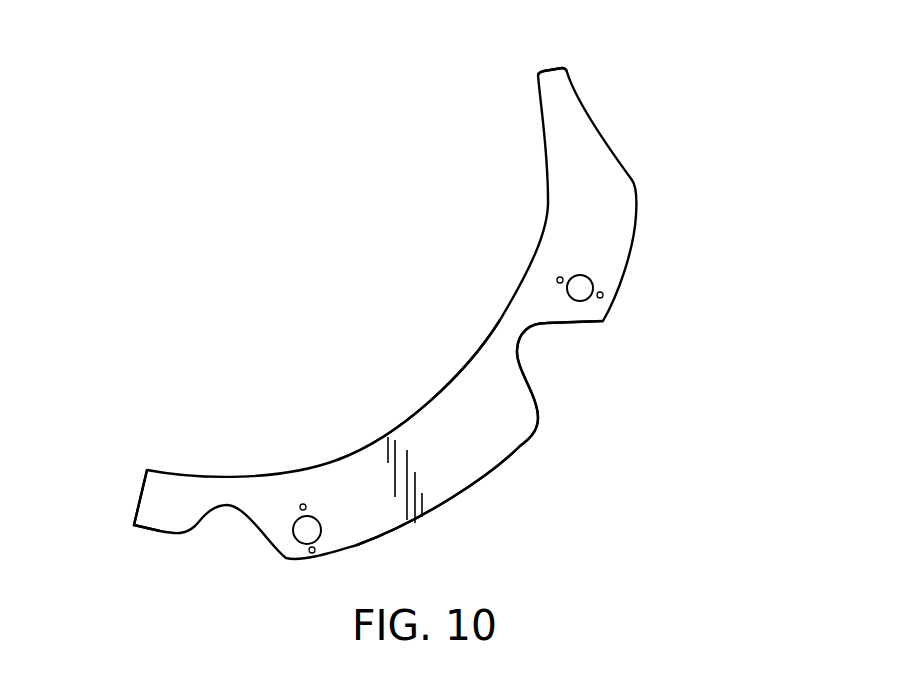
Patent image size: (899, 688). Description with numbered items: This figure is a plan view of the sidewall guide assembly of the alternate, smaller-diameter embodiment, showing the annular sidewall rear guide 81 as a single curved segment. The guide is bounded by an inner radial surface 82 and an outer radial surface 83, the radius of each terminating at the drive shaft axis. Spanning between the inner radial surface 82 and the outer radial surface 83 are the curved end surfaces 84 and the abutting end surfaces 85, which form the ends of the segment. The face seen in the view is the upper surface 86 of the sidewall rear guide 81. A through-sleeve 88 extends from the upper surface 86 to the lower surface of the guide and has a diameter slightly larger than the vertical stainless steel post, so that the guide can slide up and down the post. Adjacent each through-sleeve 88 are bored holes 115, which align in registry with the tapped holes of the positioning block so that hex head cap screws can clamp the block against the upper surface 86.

The annular sidewall rear guide 81 is at (628, 243).
The inner radial surface 82 is at (470, 370).
The outer radial surface 83 is at (470, 488).
The curved end surfaces 84 is at (530, 385).
The abutting end surfaces 85 is at (550, 70).
The upper surface 86 is at (497, 438).
The through-sleeve 88 is at (577, 278).
The bored holes 115 is at (561, 283).